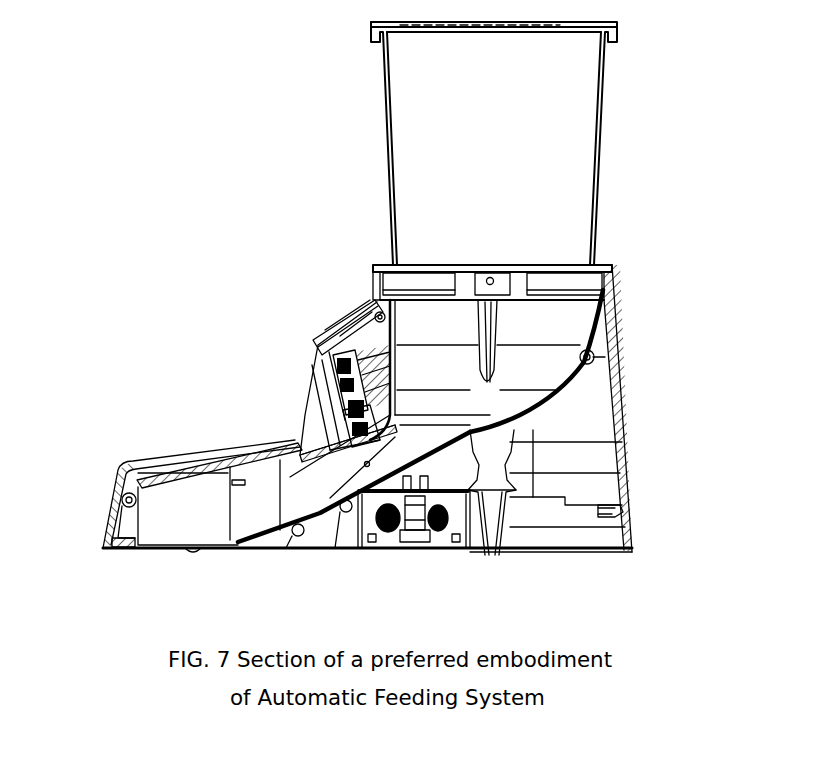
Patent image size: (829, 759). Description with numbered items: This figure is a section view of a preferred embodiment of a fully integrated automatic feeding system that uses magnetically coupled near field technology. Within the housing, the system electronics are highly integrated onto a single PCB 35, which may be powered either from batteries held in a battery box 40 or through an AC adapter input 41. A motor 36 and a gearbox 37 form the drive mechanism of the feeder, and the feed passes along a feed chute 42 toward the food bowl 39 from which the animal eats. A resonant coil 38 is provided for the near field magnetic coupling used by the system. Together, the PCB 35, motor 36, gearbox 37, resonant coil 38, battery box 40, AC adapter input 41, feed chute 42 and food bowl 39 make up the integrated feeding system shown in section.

The PCB 35 is at (345, 332).
The motor 36 is at (328, 362).
The gearbox 37 is at (325, 398).
The resonant coil 38 is at (118, 472).
The food bowl 39 is at (190, 520).
The battery box 40 is at (408, 532).
The AC adapter input 41 is at (626, 512).
The feed chute 42 is at (495, 398).